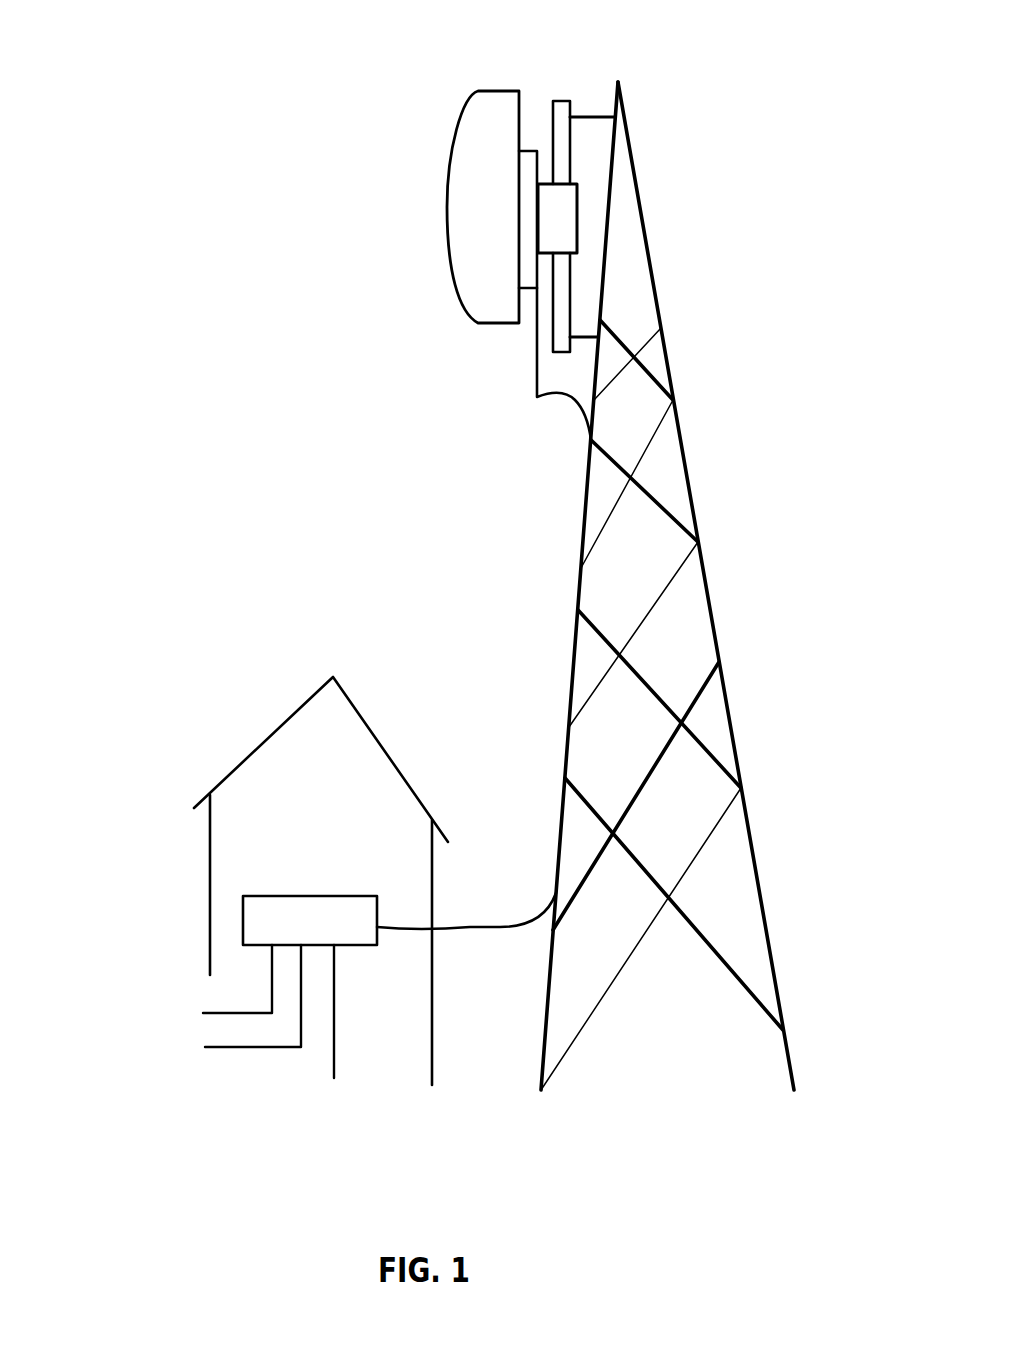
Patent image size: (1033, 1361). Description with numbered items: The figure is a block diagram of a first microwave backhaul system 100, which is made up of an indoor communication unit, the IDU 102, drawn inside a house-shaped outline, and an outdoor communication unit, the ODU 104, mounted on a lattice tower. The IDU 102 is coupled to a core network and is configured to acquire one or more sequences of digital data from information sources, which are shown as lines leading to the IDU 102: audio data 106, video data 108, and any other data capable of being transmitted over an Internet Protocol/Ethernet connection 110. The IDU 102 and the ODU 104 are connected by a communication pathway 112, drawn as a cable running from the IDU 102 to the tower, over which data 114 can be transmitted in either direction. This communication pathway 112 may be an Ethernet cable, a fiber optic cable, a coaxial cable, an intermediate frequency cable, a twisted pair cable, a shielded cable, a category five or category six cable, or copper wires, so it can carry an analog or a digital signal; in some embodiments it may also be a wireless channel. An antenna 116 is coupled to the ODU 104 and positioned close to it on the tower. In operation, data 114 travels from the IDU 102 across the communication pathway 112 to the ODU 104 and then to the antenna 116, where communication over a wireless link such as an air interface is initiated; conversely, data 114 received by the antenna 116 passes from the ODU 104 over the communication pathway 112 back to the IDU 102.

The microwave backhaul system 100 is at (176, 186).
The indoor communication unit (IDU) 102 is at (268, 896).
The outdoor communication unit (ODU) 104 is at (533, 110).
The audio data 106 is at (237, 980).
The video data 108 is at (253, 996).
The Internet Protocol (IP)/Ethernet connection 110 is at (336, 1050).
The communication pathway 112 is at (490, 931).
The data 114 is at (492, 912).
The antenna 116 is at (447, 136).